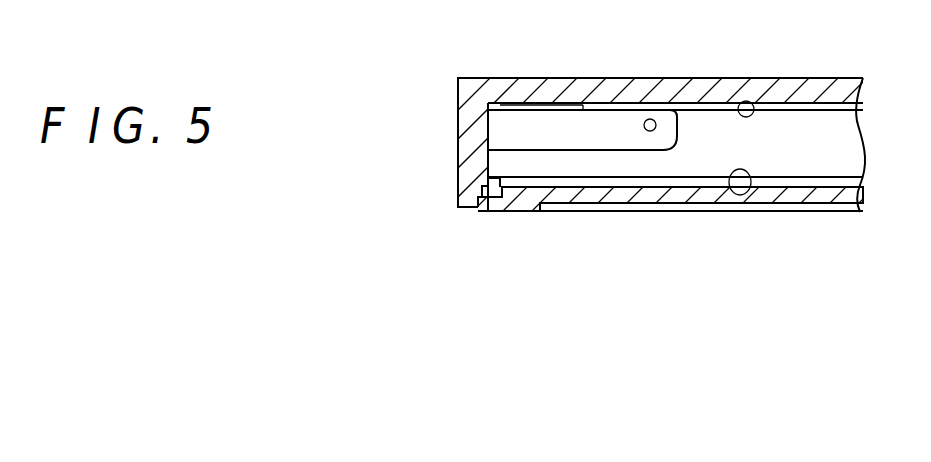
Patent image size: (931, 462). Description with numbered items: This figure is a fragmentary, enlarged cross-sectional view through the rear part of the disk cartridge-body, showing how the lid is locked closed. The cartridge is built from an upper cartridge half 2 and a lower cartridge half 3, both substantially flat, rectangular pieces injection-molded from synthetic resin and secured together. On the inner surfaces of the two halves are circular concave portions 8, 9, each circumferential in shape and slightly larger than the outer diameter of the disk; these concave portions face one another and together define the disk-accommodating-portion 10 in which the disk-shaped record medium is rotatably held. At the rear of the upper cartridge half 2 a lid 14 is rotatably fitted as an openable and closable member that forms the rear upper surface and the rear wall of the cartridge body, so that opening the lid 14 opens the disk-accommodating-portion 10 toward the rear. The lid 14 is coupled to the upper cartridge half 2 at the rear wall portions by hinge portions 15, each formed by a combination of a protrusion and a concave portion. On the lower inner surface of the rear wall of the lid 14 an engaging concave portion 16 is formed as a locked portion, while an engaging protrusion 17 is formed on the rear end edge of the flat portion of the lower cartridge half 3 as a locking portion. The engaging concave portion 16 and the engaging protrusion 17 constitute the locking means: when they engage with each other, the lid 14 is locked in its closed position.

The upper cartridge half 2 is at (817, 93).
The lower cartridge half 3 is at (826, 196).
The circular concave portion 8 is at (750, 101).
The circular concave portion 9 is at (752, 195).
The disk-accommodating-portion 10 is at (535, 135).
The lid 14 is at (528, 92).
The hinge portion 15 is at (651, 119).
The engaging concave portion 16 is at (482, 171).
The engaging protrusion 17 is at (487, 199).